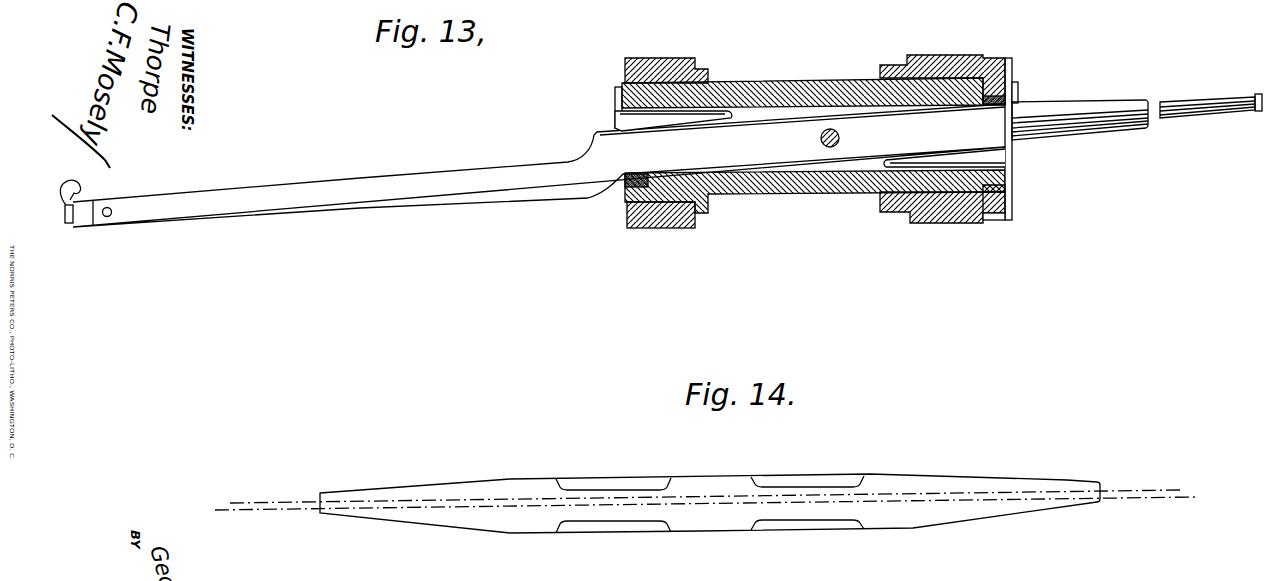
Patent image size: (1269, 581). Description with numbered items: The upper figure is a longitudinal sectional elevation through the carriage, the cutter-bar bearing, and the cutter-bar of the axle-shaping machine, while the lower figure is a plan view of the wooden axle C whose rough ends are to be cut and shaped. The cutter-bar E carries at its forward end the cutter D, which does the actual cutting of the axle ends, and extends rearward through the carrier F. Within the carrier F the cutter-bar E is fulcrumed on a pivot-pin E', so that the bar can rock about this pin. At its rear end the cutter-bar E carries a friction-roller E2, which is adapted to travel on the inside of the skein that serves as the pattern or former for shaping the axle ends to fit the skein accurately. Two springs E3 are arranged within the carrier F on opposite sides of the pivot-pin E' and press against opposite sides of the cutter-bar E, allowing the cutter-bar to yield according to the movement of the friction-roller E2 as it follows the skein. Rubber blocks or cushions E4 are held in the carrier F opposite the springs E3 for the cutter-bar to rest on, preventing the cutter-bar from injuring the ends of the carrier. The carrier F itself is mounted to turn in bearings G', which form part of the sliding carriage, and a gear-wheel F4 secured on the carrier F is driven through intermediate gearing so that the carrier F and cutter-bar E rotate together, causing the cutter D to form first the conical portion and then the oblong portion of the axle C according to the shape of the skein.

In FIG. 14, the wooden axle C is at (682, 481).
In FIG. 13, the cutter D is at (78, 189).
In FIG. 13, the cutter-bar E is at (535, 157).
In FIG. 13, the pivot-pin E' is at (811, 139).
In FIG. 13, the friction-roller E2 is at (1257, 95).
In FIG. 13, the springs E3 is at (894, 158).
In FIG. 13, the rubber blocks or cushions E4 is at (1026, 86).
In FIG. 13, the carrier F is at (831, 191).
In FIG. 13, the gear-wheel F4 is at (1006, 216).
In FIG. 13, the bearings G' is at (815, 130).